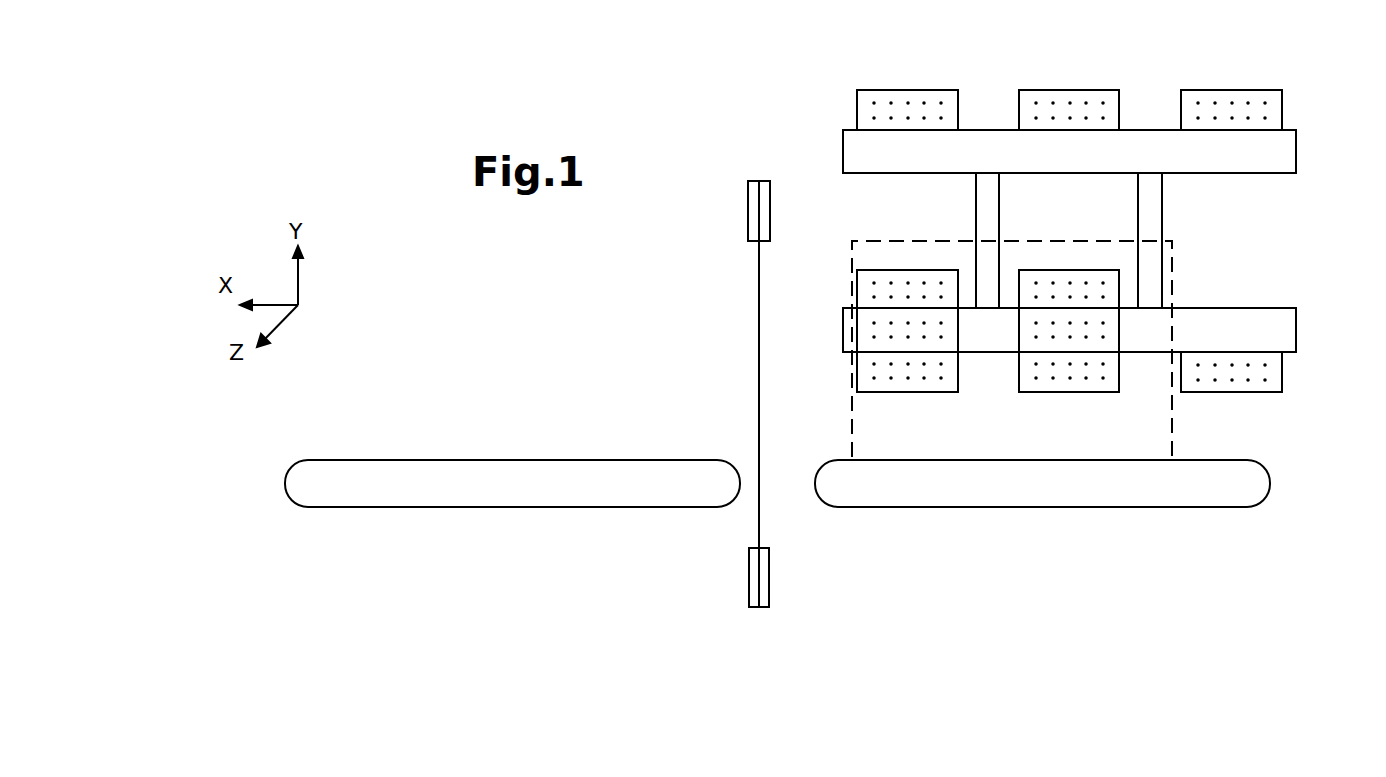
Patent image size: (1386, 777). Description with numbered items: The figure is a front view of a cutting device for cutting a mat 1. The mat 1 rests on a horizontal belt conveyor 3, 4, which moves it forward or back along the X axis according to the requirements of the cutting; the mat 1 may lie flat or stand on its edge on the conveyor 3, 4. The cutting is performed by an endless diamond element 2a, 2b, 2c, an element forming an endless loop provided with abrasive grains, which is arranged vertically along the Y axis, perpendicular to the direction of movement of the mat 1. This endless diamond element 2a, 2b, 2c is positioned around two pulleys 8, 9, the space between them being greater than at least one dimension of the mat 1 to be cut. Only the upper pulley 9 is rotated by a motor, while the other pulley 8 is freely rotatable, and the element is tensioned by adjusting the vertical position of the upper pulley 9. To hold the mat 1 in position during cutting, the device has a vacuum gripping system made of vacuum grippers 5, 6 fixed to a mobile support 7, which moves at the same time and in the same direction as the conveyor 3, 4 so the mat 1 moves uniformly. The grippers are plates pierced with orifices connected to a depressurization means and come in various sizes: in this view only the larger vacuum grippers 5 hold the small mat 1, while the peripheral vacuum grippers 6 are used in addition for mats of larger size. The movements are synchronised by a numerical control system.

The mat 1 is at (1102, 443).
The endless diamond element 2a is at (709, 394).
The endless diamond element 2b is at (709, 394).
The endless diamond element 2c is at (757, 318).
The conveyor 3 is at (1258, 486).
The conveyor 4 is at (460, 478).
The vacuum grippers 5 is at (1047, 383).
The peripheral vacuum grippers 6 is at (948, 100).
The mobile support 7 is at (1223, 163).
The pulley 8 is at (770, 568).
The upper pulley 9 is at (748, 188).